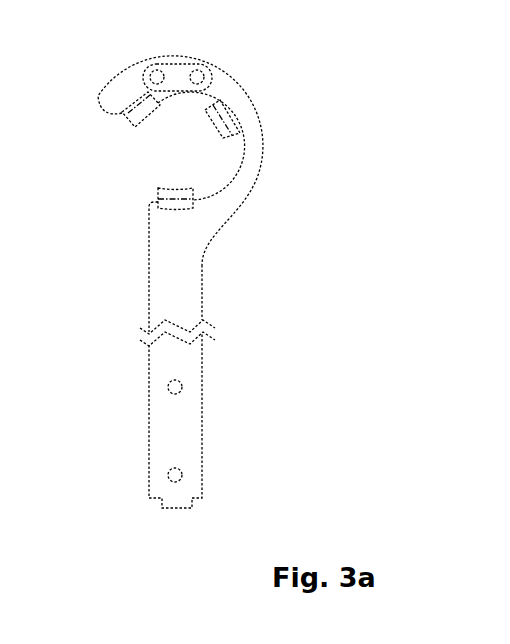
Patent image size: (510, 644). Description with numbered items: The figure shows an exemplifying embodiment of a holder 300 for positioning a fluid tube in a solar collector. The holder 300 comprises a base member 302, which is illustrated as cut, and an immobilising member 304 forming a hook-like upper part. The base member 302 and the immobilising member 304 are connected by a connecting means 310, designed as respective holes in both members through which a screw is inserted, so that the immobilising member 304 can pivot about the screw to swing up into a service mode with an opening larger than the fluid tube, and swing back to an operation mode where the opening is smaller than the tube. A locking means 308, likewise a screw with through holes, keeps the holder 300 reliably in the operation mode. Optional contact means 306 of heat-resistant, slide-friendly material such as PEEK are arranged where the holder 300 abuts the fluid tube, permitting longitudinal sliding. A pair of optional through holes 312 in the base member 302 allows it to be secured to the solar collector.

The holder 300 is at (333, 155).
The base member 302 is at (192, 273).
The immobilising member 304 is at (112, 103).
The contact means 306 is at (222, 127).
The locking means 308 is at (158, 70).
The connecting means 310 is at (197, 72).
The through holes 312 is at (182, 385).